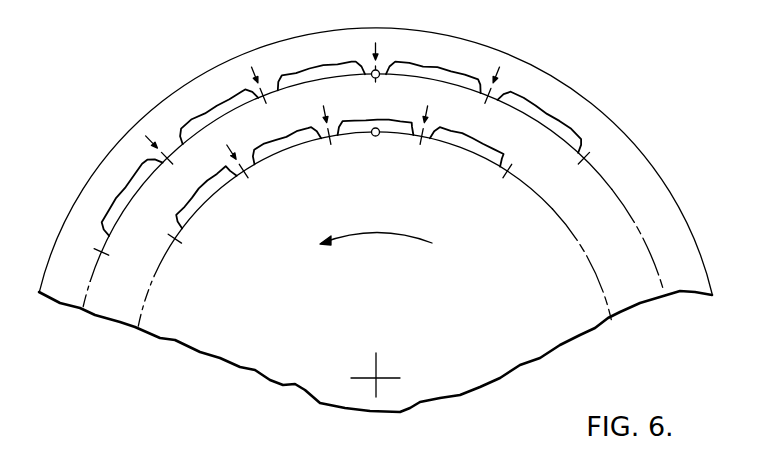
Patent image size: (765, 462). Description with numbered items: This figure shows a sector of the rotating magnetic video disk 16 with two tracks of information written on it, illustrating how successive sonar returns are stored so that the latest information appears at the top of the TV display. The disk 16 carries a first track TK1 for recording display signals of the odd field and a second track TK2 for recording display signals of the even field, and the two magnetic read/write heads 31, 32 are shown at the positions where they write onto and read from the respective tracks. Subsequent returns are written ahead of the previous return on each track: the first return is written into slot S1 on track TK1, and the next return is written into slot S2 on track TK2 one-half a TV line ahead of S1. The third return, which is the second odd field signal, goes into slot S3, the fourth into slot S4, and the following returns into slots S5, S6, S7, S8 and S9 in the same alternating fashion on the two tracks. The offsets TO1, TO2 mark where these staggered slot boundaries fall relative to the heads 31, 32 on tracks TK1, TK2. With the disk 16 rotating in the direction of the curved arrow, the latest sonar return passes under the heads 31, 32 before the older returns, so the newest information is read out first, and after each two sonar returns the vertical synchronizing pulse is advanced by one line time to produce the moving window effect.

The rotating magnetic video disk 16 is at (608, 118).
The magnetic read/write head 31 is at (377, 70).
The magnetic read/write head 32 is at (377, 136).
The first track TK1 is at (123, 210).
The second track TK2 is at (190, 213).
The track offset 1 TO1 is at (498, 73).
The track offset 2 TO2 is at (427, 108).
The slot S1 is at (540, 122).
The slot S2 is at (467, 143).
The slot S3 is at (433, 70).
The slot S4 is at (376, 114).
The slot S5 is at (321, 66).
The slot S6 is at (287, 139).
The slot S7 is at (219, 112).
The slot S8 is at (202, 197).
The slot S9 is at (132, 197).